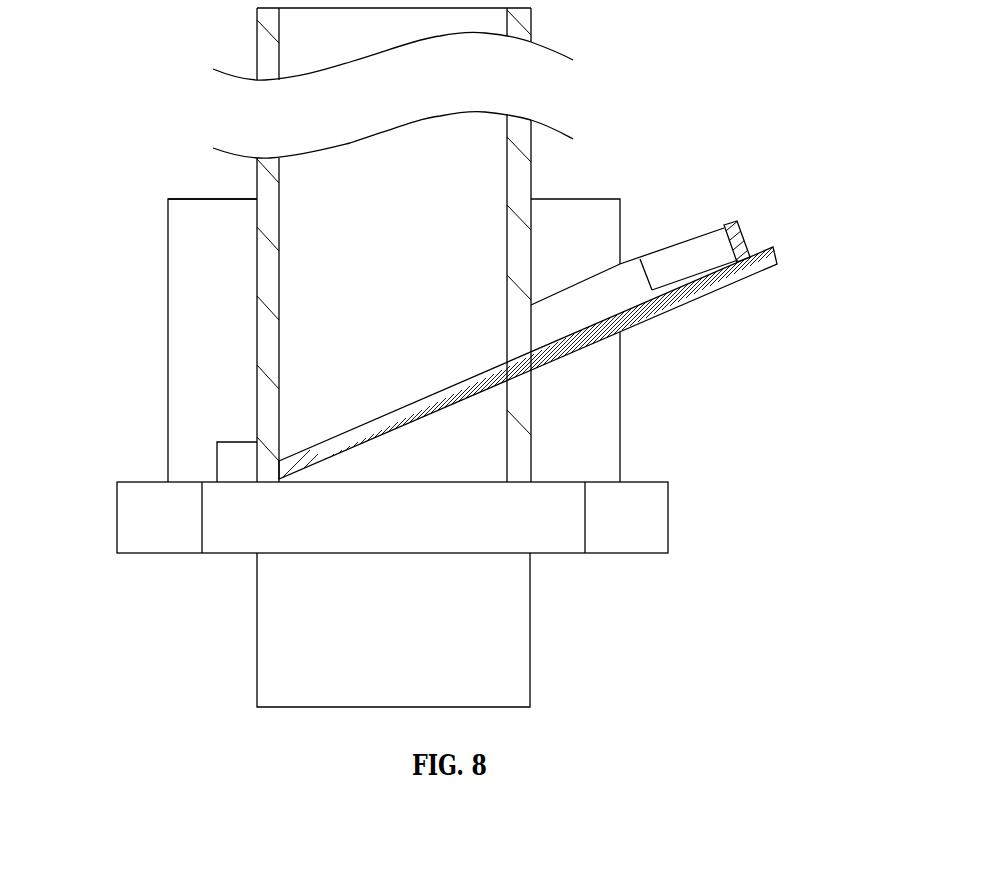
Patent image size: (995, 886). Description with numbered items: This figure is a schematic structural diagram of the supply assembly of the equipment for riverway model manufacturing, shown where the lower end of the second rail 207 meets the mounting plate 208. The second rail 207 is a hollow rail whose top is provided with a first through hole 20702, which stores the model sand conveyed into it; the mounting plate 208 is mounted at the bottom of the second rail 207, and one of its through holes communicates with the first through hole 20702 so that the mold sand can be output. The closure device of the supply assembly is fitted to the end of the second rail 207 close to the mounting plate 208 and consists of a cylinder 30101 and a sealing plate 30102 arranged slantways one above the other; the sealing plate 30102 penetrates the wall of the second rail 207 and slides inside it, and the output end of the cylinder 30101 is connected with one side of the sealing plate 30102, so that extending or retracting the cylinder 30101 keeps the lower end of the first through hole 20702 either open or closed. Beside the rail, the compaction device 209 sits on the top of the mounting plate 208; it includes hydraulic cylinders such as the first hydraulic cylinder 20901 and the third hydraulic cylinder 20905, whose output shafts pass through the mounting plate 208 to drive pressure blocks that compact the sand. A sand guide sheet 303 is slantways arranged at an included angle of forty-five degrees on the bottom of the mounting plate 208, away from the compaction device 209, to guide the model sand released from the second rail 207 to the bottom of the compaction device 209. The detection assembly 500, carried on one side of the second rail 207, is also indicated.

The second rail 207 is at (267, 220).
The first through hole 20702 is at (480, 205).
The compaction device 209 is at (232, 333).
The third hydraulic cylinder 20905 is at (247, 257).
The detection assembly 500 is at (222, 466).
The first hydraulic cylinder 20901 is at (602, 435).
The cylinder 30101 is at (602, 287).
The sealing plate 30102 is at (667, 302).
The mounting plate 208 is at (605, 525).
The sand guide sheet 303 is at (503, 653).